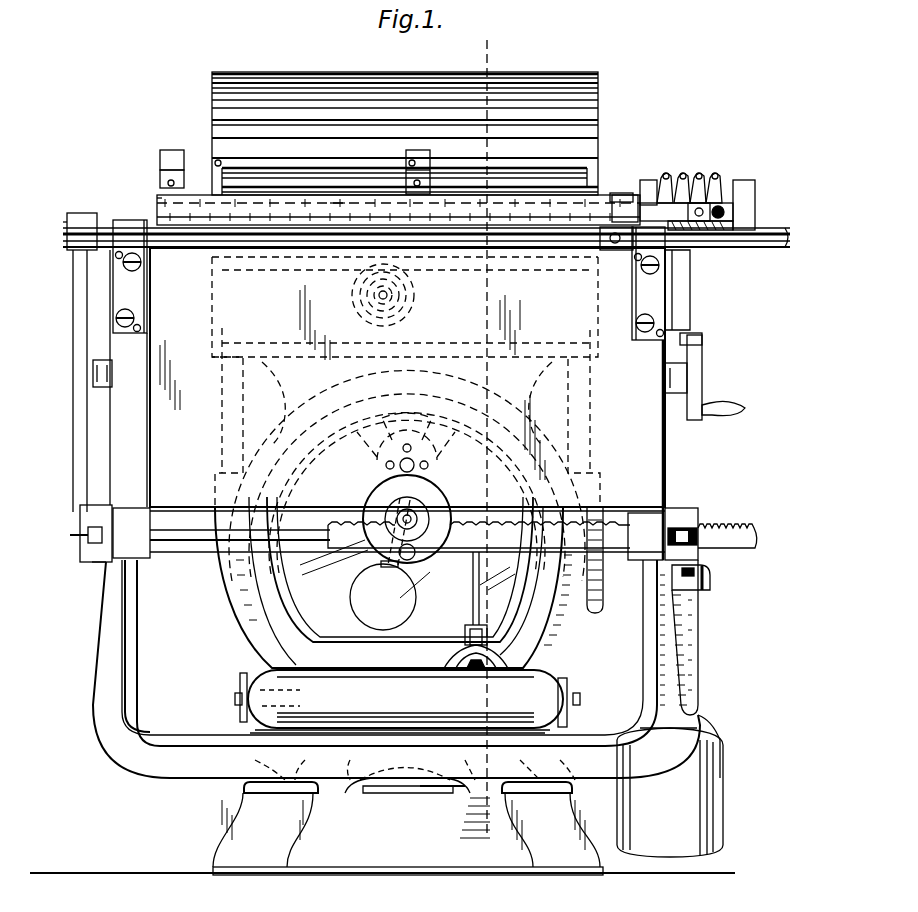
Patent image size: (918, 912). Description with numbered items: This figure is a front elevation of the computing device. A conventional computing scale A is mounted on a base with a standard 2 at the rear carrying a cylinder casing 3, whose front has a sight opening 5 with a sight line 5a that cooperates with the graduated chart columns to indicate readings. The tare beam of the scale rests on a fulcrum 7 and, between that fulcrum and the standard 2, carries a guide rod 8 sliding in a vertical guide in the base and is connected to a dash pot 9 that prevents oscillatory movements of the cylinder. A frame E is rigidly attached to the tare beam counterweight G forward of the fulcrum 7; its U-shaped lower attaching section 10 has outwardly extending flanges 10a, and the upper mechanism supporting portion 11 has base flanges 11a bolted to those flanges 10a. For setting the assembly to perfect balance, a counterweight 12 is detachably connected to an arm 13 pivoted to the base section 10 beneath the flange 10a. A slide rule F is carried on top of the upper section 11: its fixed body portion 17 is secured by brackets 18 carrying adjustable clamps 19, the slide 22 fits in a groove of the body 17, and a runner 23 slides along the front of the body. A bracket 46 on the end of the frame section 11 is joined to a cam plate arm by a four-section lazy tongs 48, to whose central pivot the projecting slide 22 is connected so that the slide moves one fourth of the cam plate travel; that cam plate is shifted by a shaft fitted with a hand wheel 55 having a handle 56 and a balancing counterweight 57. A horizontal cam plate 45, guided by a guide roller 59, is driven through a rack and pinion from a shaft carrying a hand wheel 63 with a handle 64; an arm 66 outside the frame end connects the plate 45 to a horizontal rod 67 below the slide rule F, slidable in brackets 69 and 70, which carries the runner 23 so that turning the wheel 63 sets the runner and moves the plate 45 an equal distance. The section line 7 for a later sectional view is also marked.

The standard 2 is at (590, 460).
The cylinder casing 3 is at (592, 117).
The sight opening 5 is at (240, 168).
The sight line 5a is at (340, 204).
The fulcrum 7 is at (515, 42).
The guide rod 8 is at (400, 793).
The dash pot 9 is at (448, 793).
The lower attaching section 10 is at (690, 712).
The outwardly extending flanges 10a is at (82, 560).
The upper mechanism supporting portion 11 is at (664, 470).
The base flanges 11a is at (698, 518).
The counterweight 12 is at (723, 780).
The arm 13 is at (698, 628).
The fixed body portion 17 is at (596, 196).
The brackets 18 is at (163, 157).
The adjustable clamps 19 is at (160, 180).
The slide 22 is at (575, 205).
The runner 23 is at (630, 195).
The cam plate 45 is at (200, 541).
The bracket 46 is at (750, 205).
The lazy tongs 48 is at (690, 180).
The hand wheel 55 is at (697, 352).
The handle 56 is at (712, 405).
The counterweight 57 is at (690, 336).
The guide roller 59 is at (78, 535).
The hand wheel 63 is at (420, 578).
The handle 64 is at (407, 558).
The arm 66 is at (73, 448).
The horizontal rod 67 is at (196, 243).
The bracket 69 is at (143, 294).
The bracket 70 is at (650, 293).
The computing scale A is at (400, 519).
The frame E is at (137, 623).
The slide rule F is at (160, 200).
The counterweight G is at (240, 717).